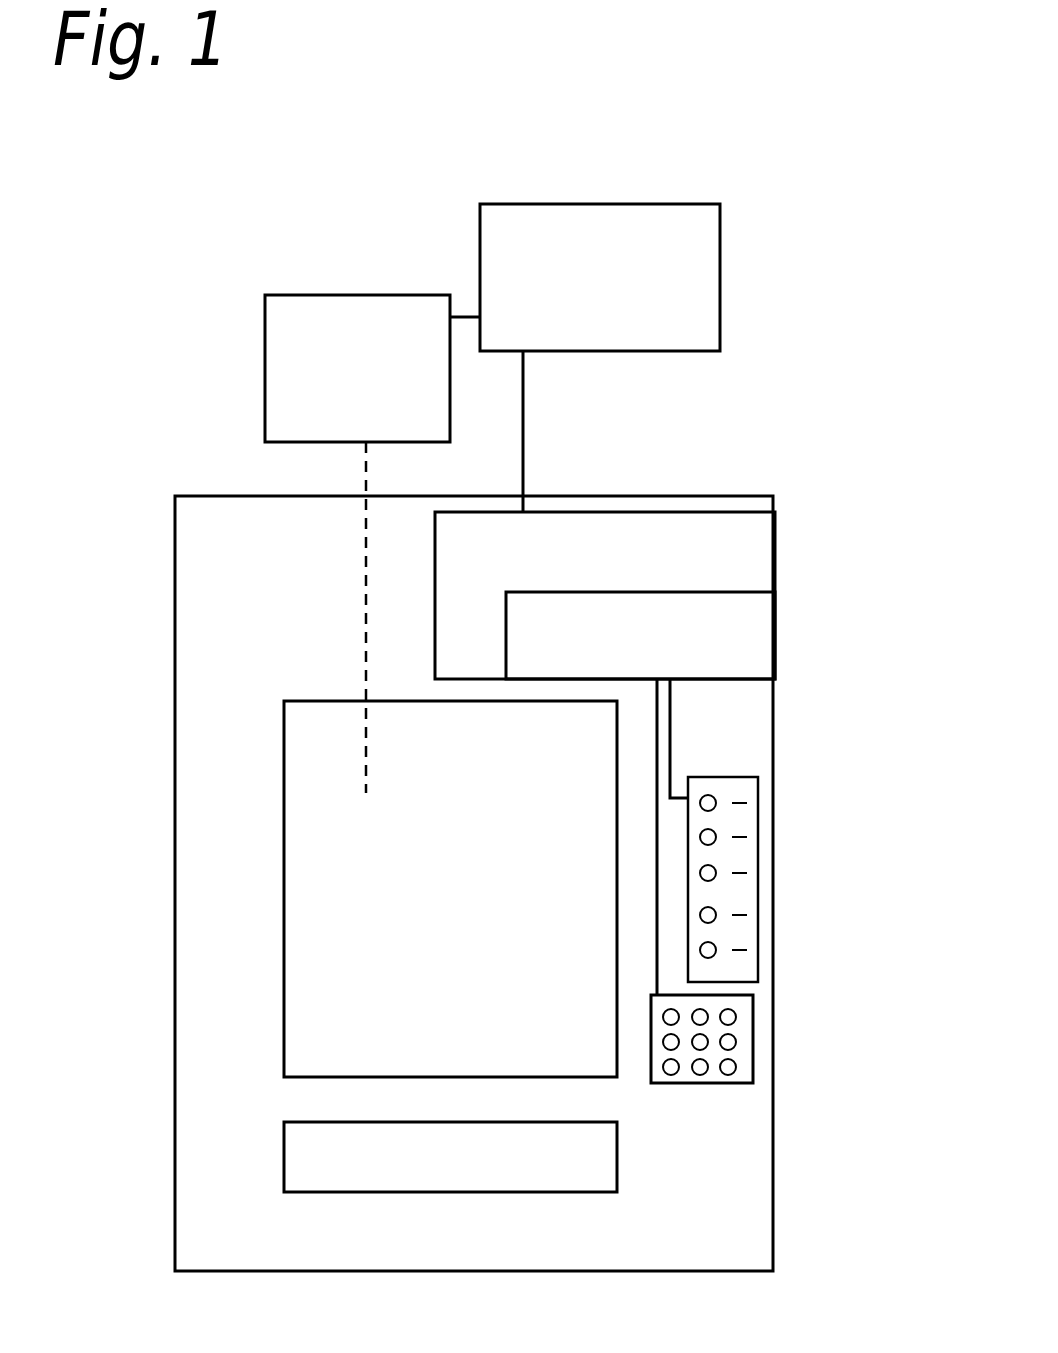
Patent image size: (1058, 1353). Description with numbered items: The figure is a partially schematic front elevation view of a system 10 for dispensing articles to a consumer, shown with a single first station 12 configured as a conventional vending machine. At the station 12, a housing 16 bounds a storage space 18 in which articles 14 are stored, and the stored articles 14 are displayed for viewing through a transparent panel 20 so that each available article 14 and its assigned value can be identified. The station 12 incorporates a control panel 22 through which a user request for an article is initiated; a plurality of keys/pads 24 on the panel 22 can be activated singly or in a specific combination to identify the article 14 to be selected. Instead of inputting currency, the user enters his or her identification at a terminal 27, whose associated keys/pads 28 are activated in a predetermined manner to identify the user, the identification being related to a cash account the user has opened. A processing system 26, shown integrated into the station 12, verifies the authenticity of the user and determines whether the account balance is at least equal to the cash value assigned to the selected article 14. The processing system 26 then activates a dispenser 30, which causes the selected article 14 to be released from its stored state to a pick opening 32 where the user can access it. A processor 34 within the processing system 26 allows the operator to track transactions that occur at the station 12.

The system 10 is at (792, 140).
The first station 12 is at (198, 628).
The articles 14 is at (368, 409).
The housing 16 is at (175, 860).
The storage space 18 is at (237, 530).
The transparent panel 20 is at (305, 863).
The control panel 22 is at (762, 903).
The keys/pads 24 is at (717, 835).
The processing system 26 is at (489, 652).
The terminal 27 is at (758, 1062).
The keys/pads 28 is at (672, 1068).
The dispenser 30 is at (608, 319).
The pick opening 32 is at (340, 1170).
The processor 34 is at (648, 664).